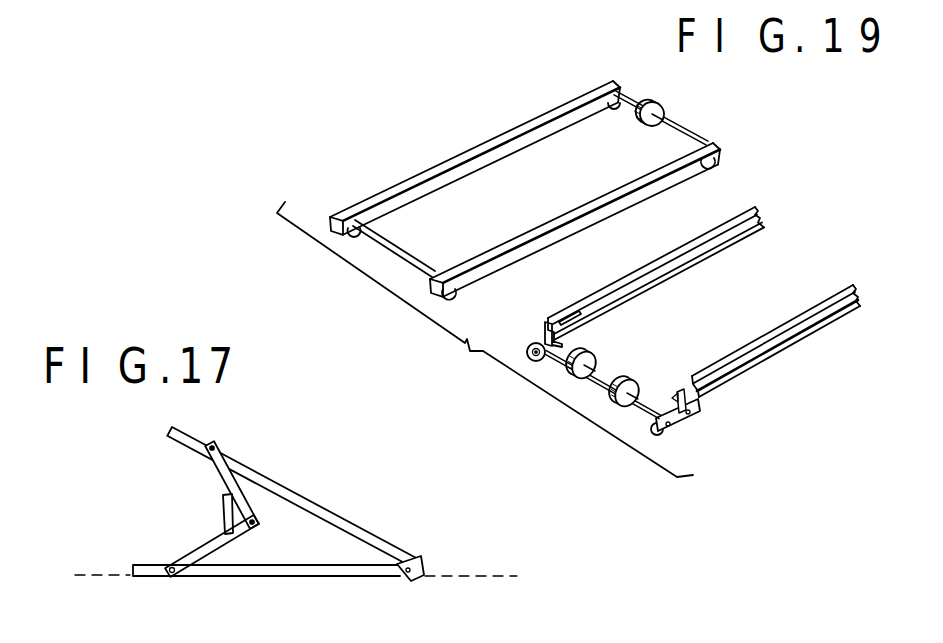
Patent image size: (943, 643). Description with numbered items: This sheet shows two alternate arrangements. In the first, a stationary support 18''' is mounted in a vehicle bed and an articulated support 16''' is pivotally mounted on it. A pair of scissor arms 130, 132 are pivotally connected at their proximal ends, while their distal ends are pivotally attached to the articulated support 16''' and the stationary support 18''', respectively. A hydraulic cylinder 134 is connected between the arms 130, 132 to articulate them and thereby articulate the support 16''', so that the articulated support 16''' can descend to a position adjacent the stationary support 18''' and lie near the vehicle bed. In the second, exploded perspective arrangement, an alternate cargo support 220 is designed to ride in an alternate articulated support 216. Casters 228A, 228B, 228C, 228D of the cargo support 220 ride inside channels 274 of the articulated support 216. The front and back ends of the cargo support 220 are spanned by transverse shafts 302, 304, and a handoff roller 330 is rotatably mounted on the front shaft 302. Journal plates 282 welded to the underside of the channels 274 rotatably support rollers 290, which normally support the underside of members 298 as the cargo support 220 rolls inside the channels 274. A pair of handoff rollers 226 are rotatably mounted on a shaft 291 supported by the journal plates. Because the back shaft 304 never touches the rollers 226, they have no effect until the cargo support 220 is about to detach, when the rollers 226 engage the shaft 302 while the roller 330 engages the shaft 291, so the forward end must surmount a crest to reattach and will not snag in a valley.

In FIG. 19, the articulated support 216 is at (806, 353).
In FIG. 19, the cargo support 220 is at (502, 108).
In FIG. 19, the handoff rollers 226 is at (598, 352).
In FIG. 19, the caster 228A is at (718, 163).
In FIG. 19, the caster 228B is at (612, 108).
In FIG. 19, the caster 228C is at (505, 272).
In FIG. 19, the caster 228D is at (354, 238).
In FIG. 19, the channels 274 is at (778, 323).
In FIG. 19, the journal plates 282 is at (538, 342).
In FIG. 19, the rollers 290 is at (529, 364).
In FIG. 19, the shaft 291 is at (593, 392).
In FIG. 19, the members 298 is at (582, 204).
In FIG. 19, the transverse shaft 302 is at (624, 100).
In FIG. 19, the transverse shaft 304 is at (412, 266).
In FIG. 19, the handoff roller 330 is at (669, 106).
In FIG. 17, the articulated support 16''' is at (295, 493).
In FIG. 17, the stationary support 18''' is at (266, 599).
In FIG. 17, the scissor arm 130 is at (256, 504).
In FIG. 17, the scissor arm 132 is at (195, 552).
In FIG. 17, the hydraulic cylinder 134 is at (225, 514).